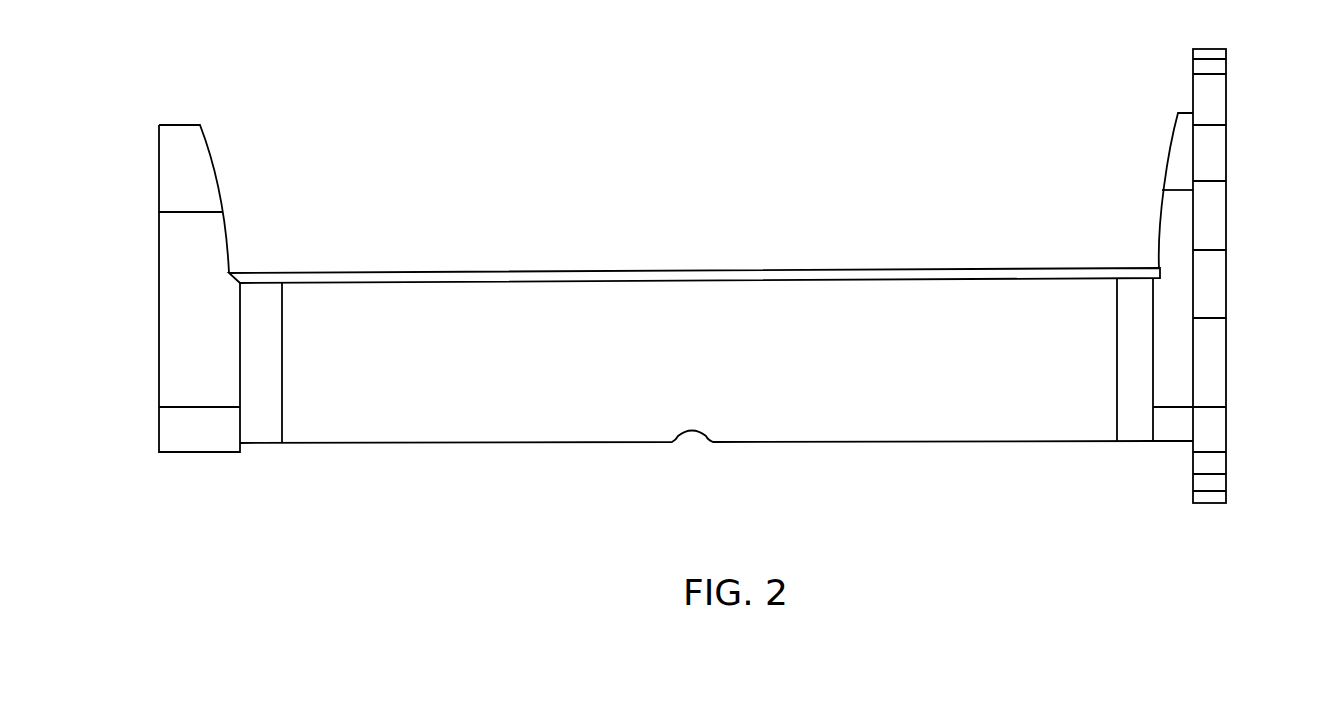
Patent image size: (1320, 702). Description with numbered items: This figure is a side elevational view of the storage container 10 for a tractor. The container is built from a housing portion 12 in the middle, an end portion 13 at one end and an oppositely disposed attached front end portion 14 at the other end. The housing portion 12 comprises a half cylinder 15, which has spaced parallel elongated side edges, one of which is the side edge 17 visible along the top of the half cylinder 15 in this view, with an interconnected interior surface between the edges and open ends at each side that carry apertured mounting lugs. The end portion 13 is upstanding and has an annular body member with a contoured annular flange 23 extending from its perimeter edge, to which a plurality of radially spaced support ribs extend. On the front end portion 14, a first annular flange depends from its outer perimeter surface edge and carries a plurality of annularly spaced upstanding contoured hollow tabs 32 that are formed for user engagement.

The storage container 10 is at (988, 100).
The housing portion 12 is at (803, 457).
The end portion 13 is at (217, 145).
The front end portion 14 is at (1237, 230).
The half cylinder 15 is at (535, 417).
The side edge 17 is at (507, 270).
The contoured annular flange 23 is at (185, 333).
The hollow tabs 32 is at (1210, 153).